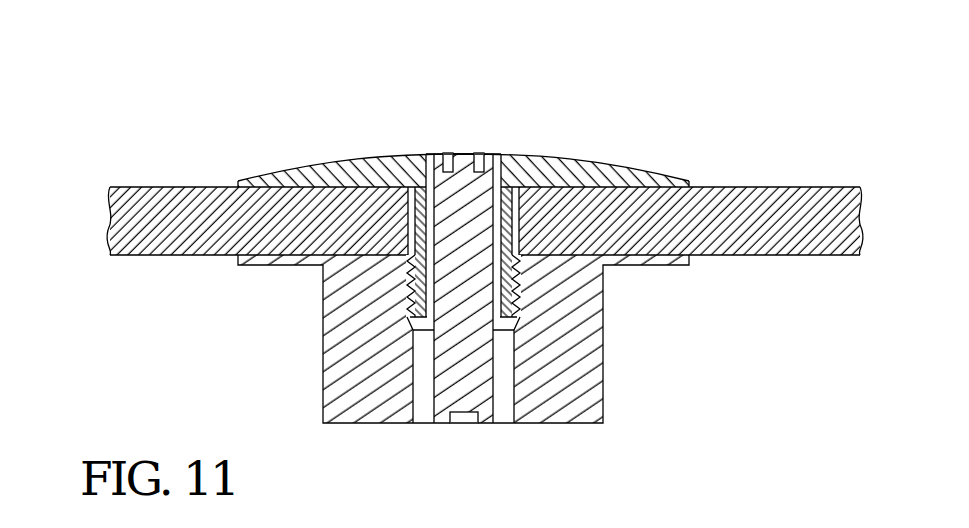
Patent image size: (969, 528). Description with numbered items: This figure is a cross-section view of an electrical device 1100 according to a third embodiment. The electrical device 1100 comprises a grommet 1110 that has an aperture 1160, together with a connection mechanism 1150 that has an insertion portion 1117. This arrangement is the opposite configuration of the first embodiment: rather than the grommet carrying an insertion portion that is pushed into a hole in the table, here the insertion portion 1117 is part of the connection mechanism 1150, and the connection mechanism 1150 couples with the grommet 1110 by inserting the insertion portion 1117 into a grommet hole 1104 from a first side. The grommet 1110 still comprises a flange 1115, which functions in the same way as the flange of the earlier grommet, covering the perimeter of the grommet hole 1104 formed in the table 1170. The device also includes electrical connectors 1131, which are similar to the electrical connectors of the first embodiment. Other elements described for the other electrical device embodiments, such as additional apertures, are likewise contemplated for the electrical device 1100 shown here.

The electrical device 1100 is at (728, 385).
The grommet hole 1104 is at (524, 218).
The grommet 1110 is at (438, 125).
The flange 1115 is at (563, 157).
The insertion portion 1117 is at (460, 269).
The electrical connectors 1131 is at (479, 153).
The connection mechanism 1150 is at (427, 305).
The aperture 1160 is at (429, 150).
The table 1170 is at (801, 256).